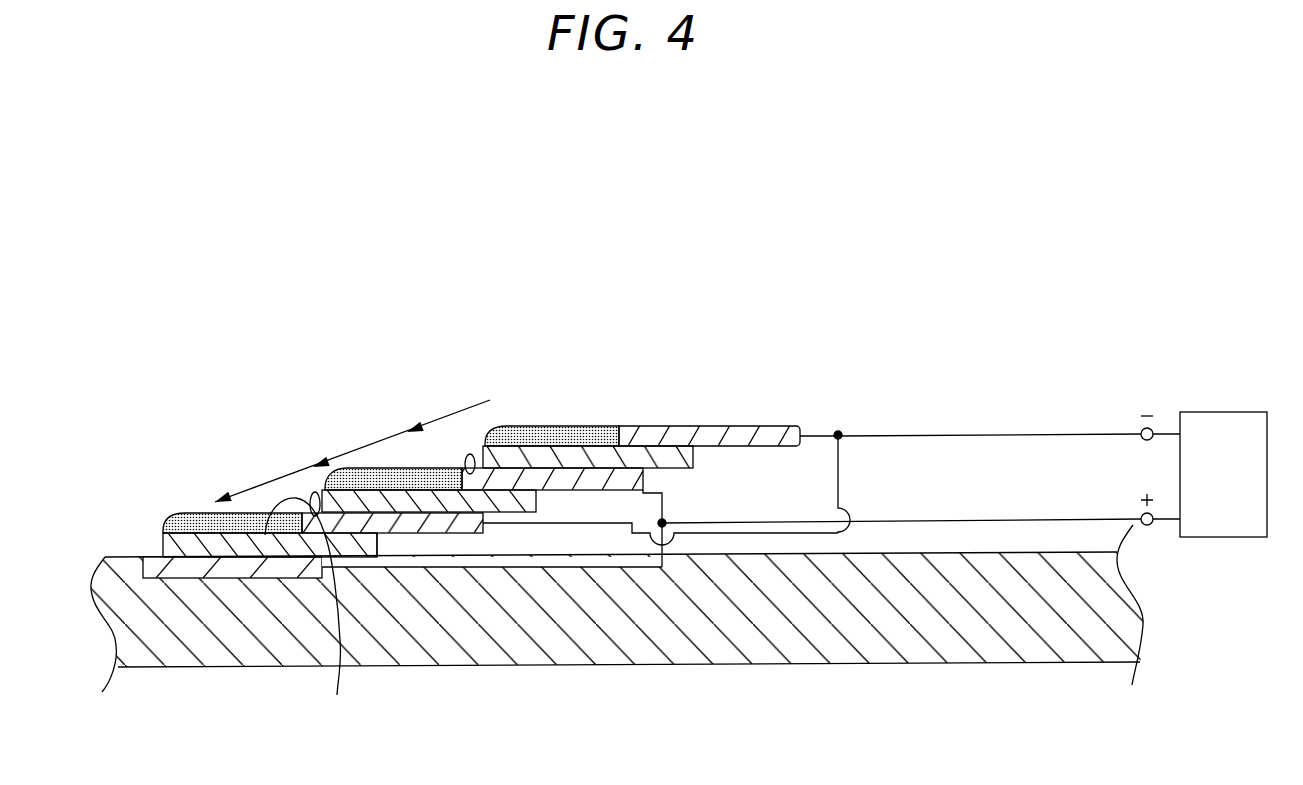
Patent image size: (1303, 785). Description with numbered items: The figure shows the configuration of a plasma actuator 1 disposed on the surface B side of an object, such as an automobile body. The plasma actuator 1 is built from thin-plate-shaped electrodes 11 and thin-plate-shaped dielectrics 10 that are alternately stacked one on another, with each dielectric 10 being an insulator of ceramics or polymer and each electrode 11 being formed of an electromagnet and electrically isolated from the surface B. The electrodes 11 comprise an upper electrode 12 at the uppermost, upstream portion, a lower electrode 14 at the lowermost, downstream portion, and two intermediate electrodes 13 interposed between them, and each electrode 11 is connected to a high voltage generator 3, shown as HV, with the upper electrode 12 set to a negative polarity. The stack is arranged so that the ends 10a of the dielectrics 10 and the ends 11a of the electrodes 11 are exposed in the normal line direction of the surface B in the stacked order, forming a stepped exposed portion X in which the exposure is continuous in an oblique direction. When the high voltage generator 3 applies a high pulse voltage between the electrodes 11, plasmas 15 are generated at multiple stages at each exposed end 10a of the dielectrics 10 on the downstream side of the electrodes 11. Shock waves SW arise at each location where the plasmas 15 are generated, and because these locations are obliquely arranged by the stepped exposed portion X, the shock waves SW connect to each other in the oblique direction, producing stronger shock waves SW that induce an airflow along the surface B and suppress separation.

The plasma actuator 1 is at (602, 441).
The high voltage generator 3 is at (1207, 412).
The dielectric 10 is at (465, 497).
The end of dielectric 10a is at (163, 550).
The electrode 11 is at (503, 497).
The end of electrode 11a is at (155, 556).
The upper electrode 12 is at (733, 426).
The intermediate electrode 13 is at (453, 533).
The lower electrode 14 is at (183, 578).
The plasma 15 is at (203, 507).
The surface of the object B is at (123, 556).
The shock wave SW is at (265, 490).
The stepped exposed portion X is at (335, 308).